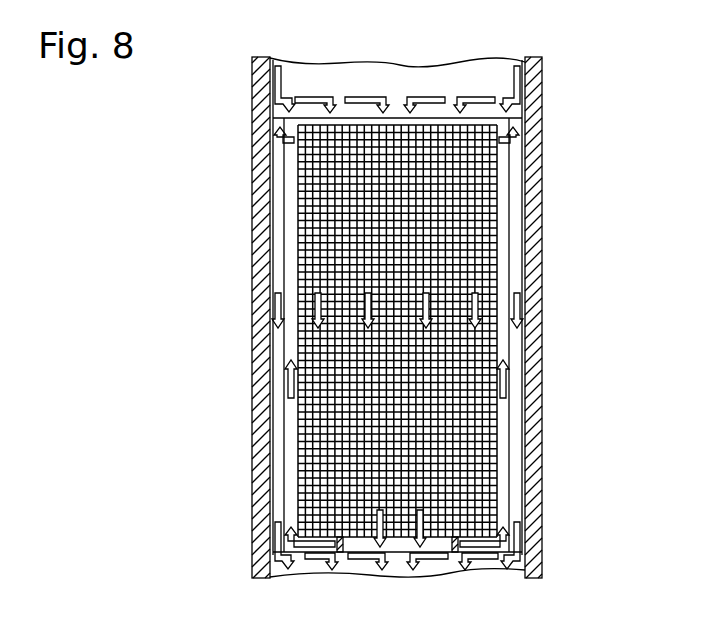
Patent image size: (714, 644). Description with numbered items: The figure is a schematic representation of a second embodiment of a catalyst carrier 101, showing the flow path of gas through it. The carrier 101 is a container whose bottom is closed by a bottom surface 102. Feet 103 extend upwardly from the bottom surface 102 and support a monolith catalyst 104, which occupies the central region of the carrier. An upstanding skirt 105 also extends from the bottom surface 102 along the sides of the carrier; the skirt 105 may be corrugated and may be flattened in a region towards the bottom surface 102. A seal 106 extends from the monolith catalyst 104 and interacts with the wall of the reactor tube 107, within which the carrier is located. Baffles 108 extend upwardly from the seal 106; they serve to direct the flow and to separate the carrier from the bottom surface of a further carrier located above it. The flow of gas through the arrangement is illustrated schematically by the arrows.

The catalyst carrier 101 is at (283, 228).
The bottom surface 102 is at (262, 572).
The feet 103 is at (452, 542).
The monolith catalyst 104 is at (468, 347).
The upstanding skirt 105 is at (515, 257).
The seal 106 is at (520, 116).
The reactor tube 107 is at (532, 180).
The baffles 108 is at (278, 116).